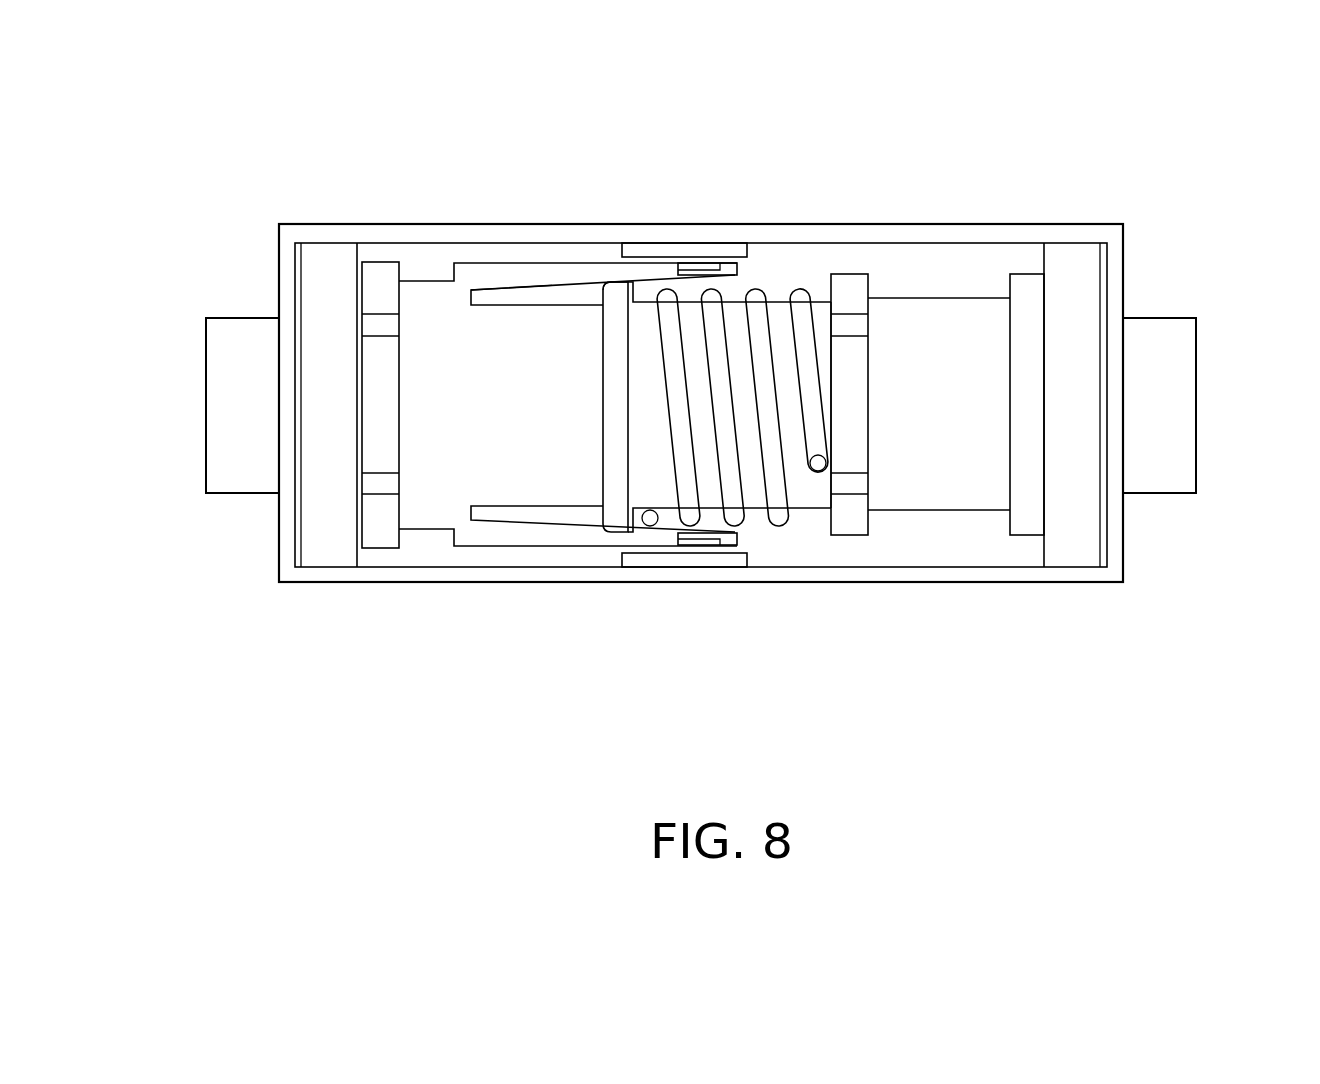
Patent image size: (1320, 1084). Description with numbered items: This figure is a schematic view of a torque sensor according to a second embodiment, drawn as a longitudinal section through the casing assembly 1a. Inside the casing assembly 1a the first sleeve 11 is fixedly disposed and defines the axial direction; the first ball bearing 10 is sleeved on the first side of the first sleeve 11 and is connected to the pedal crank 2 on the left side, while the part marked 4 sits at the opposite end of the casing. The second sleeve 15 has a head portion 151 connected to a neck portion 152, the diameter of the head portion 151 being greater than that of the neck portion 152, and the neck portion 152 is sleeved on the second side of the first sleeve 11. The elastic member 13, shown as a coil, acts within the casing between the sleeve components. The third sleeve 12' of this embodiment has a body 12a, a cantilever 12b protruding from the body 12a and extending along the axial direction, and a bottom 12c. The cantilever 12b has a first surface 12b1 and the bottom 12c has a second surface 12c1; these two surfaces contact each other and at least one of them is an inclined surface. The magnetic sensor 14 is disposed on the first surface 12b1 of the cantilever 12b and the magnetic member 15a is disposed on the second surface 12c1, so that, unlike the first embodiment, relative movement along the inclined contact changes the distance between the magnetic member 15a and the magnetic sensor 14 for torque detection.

The casing assembly 1a is at (872, 235).
The pedal crank 2 is at (213, 412).
The second connector cap 4 is at (1173, 400).
The first ball bearing 10 is at (328, 256).
The first sleeve 11 is at (383, 272).
The third sleeve 12' is at (615, 449).
The body 12a is at (452, 471).
The cantilever 12b is at (598, 422).
The first surface 12b1 is at (552, 300).
The bottom 12c is at (695, 416).
The second surface 12c1 is at (612, 280).
The elastic member 13 is at (688, 512).
The magnetic sensor 14 is at (693, 248).
The magnetic member 15a is at (715, 268).
The second sleeve 15 is at (828, 507).
The head portion 151 is at (855, 483).
The neck portion 152 is at (810, 495).